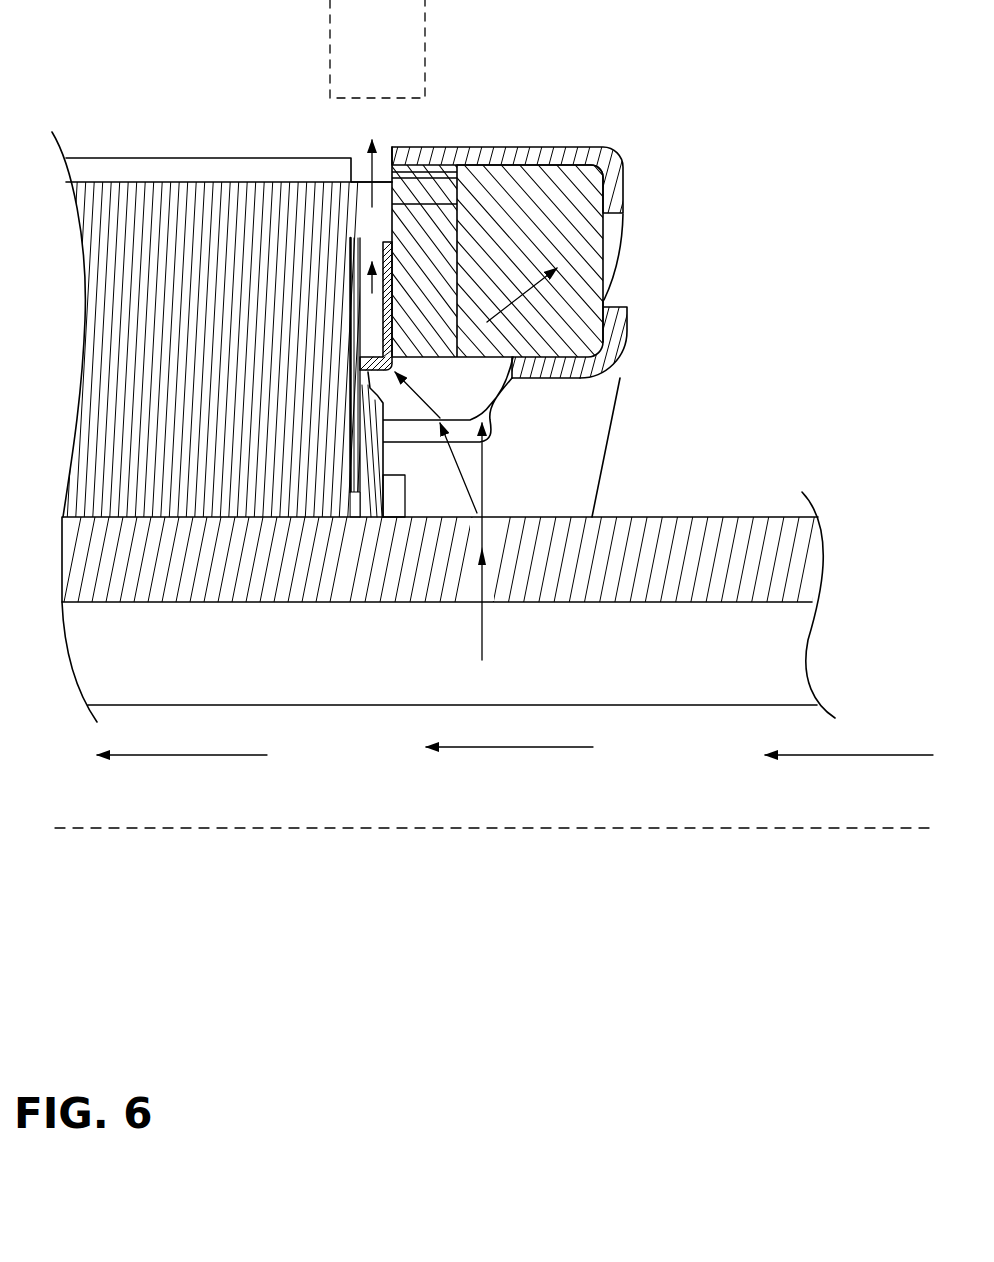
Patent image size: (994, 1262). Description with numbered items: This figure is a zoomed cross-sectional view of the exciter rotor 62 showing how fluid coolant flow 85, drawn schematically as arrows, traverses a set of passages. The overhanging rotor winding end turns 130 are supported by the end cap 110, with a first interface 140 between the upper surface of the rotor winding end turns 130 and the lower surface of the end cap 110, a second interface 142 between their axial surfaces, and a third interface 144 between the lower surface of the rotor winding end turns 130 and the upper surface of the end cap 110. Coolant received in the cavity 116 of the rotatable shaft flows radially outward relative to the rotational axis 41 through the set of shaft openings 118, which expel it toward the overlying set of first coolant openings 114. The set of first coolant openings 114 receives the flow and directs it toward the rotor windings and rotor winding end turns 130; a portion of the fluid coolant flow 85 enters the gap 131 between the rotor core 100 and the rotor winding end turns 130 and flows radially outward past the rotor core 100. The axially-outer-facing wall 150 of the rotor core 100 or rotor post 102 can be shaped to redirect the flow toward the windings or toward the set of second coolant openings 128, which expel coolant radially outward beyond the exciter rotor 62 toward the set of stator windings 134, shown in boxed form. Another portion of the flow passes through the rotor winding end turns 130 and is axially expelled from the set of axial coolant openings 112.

The rotational axis 41 is at (782, 816).
The exciter rotor 62 is at (768, 32).
The fluid coolant flow 85 is at (374, 165).
The rotor core 100 is at (170, 448).
The rotor post 102 is at (138, 397).
The end cap 110 is at (620, 148).
The set of axial coolant openings 112 is at (630, 268).
The set of first coolant openings 114 is at (512, 406).
The cavity 116 is at (598, 680).
The set of shaft openings 118 is at (495, 556).
The set of second coolant openings 128 is at (358, 158).
The rotor winding end turns 130 is at (563, 210).
The gap 131 is at (380, 234).
The set of stator windings 134 is at (361, 52).
The first interface 140 is at (538, 148).
The second interface 142 is at (607, 319).
The third interface 144 is at (580, 387).
The axially-outer-facing wall 150 is at (352, 302).